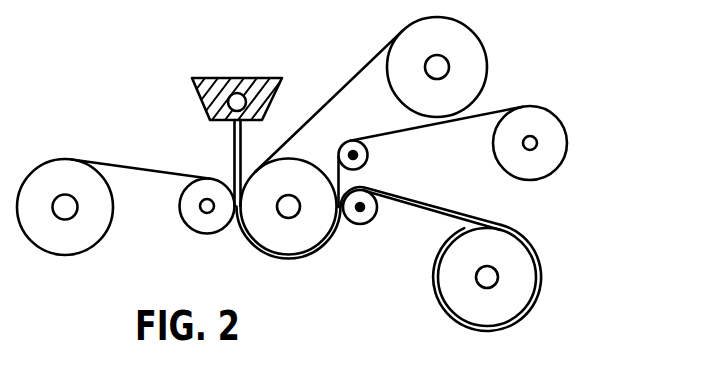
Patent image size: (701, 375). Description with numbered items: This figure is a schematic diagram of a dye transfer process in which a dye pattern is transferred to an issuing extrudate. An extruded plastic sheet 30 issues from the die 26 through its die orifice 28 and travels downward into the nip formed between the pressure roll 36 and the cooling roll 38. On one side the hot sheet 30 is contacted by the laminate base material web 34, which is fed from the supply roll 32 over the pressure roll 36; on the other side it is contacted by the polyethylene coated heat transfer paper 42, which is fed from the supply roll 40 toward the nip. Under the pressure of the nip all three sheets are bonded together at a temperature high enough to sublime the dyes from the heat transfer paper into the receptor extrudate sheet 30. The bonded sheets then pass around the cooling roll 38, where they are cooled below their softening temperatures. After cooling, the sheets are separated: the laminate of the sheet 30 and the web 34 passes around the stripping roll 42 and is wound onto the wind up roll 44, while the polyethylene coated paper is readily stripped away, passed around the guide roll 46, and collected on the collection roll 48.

The die 26 is at (197, 100).
The die orifice 28 is at (227, 124).
The extruded plastic sheet 30 is at (241, 157).
The supply roll 32 is at (88, 245).
The laminate base material web 34 is at (152, 167).
The pressure roll 36 is at (193, 228).
The cooling roll 38 is at (313, 235).
The supply roll 40 is at (482, 77).
The heat transfer paper / stripping roll 42 is at (315, 115).
The wind up roll 44 is at (517, 287).
The guide roll 46 is at (367, 154).
The collection roll 48 is at (558, 133).